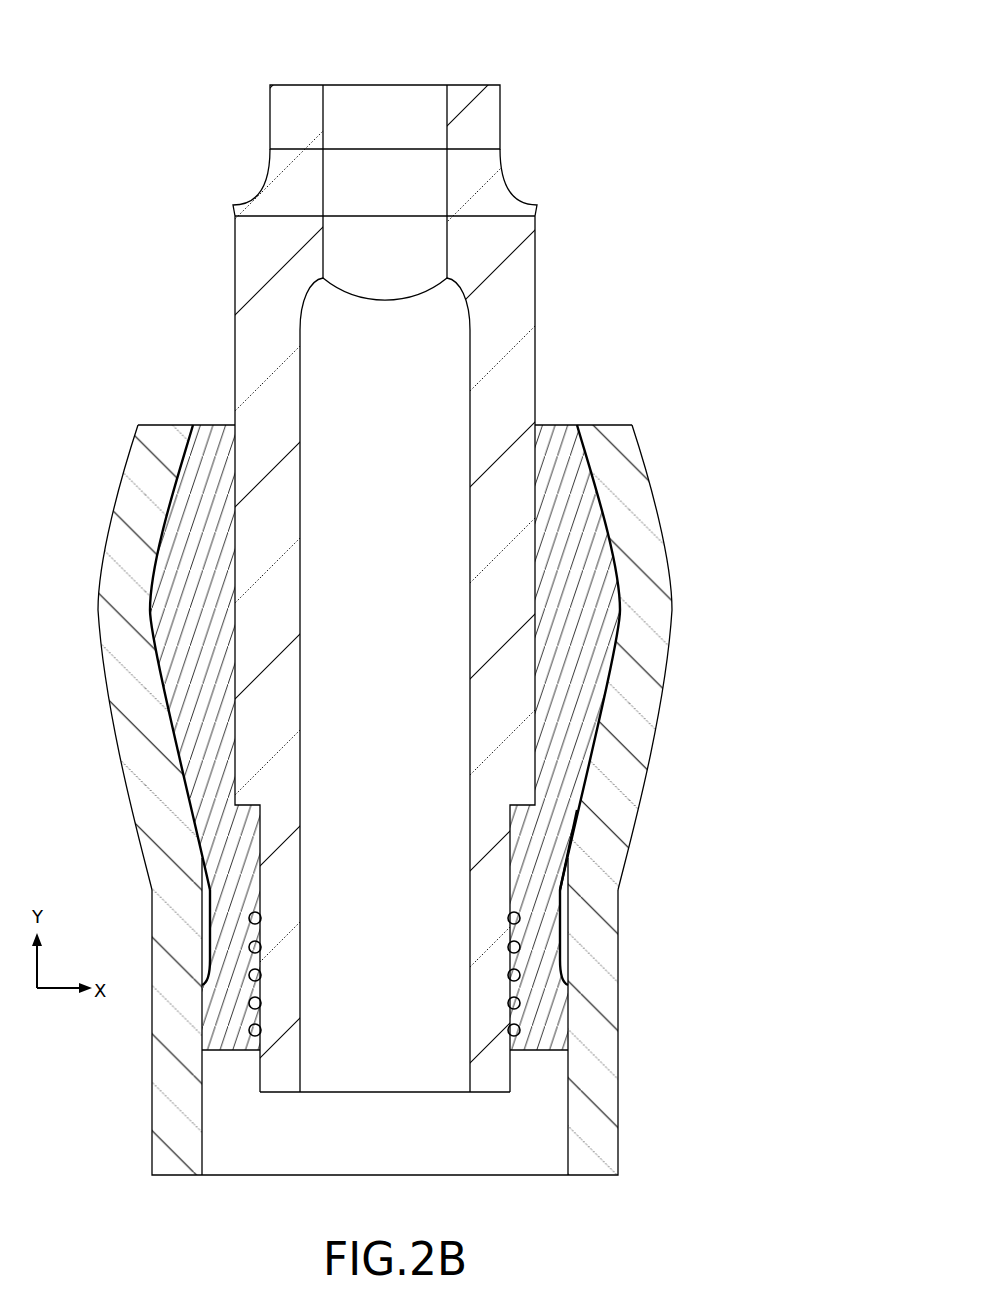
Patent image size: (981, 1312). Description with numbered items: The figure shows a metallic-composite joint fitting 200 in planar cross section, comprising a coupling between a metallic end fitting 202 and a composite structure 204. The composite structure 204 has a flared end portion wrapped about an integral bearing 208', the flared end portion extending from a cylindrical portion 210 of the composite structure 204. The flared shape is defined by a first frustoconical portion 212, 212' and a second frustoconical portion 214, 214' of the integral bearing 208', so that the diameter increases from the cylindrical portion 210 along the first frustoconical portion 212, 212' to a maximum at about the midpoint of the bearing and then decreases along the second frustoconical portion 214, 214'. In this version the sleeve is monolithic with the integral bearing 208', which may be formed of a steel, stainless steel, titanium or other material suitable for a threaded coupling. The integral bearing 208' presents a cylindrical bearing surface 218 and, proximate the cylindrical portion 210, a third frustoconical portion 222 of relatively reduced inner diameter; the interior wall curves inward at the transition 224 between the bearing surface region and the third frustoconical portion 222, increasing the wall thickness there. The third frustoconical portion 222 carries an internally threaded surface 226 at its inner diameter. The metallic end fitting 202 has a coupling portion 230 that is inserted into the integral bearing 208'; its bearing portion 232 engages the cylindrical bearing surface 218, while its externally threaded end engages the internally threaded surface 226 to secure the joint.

The metallic-composite joint fitting 200 is at (426, 592).
The metallic end fitting 202 is at (527, 110).
The coupling portion 230 is at (352, 633).
The composite structure 204 is at (431, 800).
The cylindrical portion 210 is at (378, 800).
The second frustoconical portion 214 is at (643, 517).
The second frustoconical portion 214' is at (108, 517).
The first frustoconical portion 212 is at (634, 657).
The first frustoconical portion 212' is at (141, 657).
The cylindrical bearing surface 218 is at (237, 580).
The bearing portion 232 is at (248, 617).
The integral bearing 208' is at (601, 737).
The transition 224 is at (520, 823).
The third frustoconical portion 222 is at (533, 883).
The internally threaded surface 226 is at (514, 977).